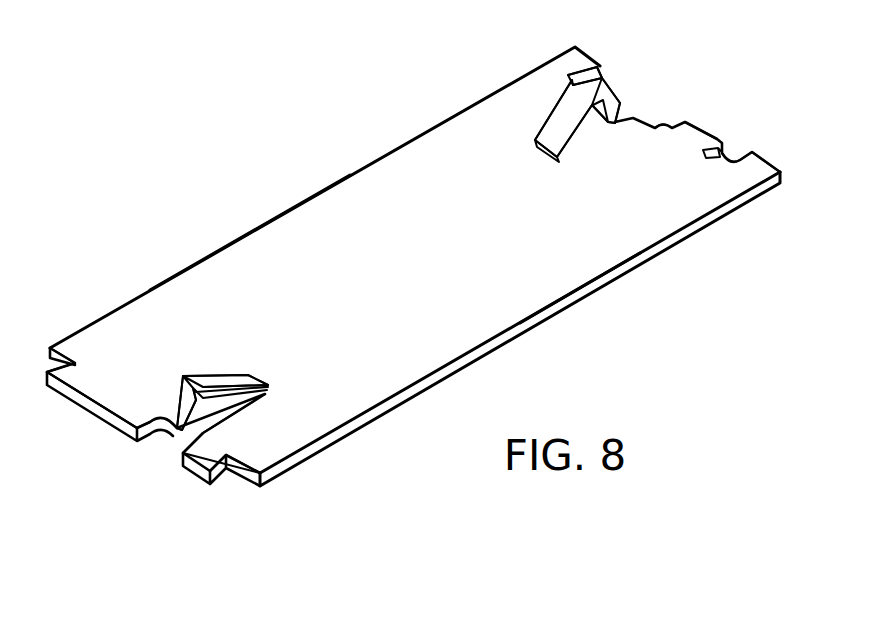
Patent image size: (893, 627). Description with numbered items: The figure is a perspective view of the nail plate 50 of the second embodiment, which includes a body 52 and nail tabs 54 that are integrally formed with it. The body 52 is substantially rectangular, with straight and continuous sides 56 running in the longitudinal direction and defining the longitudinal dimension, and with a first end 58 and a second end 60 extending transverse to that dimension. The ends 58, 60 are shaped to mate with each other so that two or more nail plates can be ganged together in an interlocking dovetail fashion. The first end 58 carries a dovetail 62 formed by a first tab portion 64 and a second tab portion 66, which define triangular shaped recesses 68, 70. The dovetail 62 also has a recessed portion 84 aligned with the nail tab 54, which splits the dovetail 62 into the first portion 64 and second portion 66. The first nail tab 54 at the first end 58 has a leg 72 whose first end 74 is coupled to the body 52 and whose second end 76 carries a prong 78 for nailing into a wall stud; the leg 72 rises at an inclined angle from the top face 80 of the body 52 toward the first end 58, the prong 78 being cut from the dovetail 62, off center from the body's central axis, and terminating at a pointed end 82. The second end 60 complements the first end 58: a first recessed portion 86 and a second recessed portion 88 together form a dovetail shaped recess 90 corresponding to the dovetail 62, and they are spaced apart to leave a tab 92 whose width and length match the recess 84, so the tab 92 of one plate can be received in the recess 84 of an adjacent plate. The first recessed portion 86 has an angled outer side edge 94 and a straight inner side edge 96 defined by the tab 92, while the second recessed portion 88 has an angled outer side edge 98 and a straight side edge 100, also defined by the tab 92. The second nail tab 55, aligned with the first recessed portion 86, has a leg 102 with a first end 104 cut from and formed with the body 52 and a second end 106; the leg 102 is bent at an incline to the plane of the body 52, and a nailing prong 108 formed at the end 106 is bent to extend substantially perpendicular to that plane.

The nail plate 50 is at (537, 348).
The body 52 is at (370, 198).
The nail tab 54 is at (207, 372).
The second nail tab 55 is at (555, 101).
The sides 56 is at (253, 230).
The first end 58 is at (105, 418).
The second end 60 is at (715, 123).
The dovetail 62 is at (215, 503).
The first tab portion 64 is at (94, 382).
The second tab portion 66 is at (187, 467).
The triangular shaped recess 68 is at (50, 348).
The triangular shaped recess 70 is at (232, 468).
The leg 72 is at (230, 384).
The first end of leg 74 is at (270, 386).
The second end of leg 76 is at (188, 380).
The prong 78 is at (185, 398).
The top face 80 is at (575, 260).
The pointed end 82 is at (173, 436).
The recessed portion 84 is at (158, 443).
The first recessed portion 86 is at (615, 80).
The second recessed portion 88 is at (735, 150).
The dovetail shaped recess 90 is at (667, 105).
The tab 92 is at (695, 130).
The angled outer side edge 94 is at (599, 65).
The straight inner side edge 96 is at (650, 122).
The angled outer side edge 98 is at (733, 167).
The straight side edge 100 is at (728, 163).
The leg 102 is at (550, 122).
The first end of leg 104 is at (536, 145).
The second end of leg 106 is at (556, 72).
The nailing prong 108 is at (622, 110).